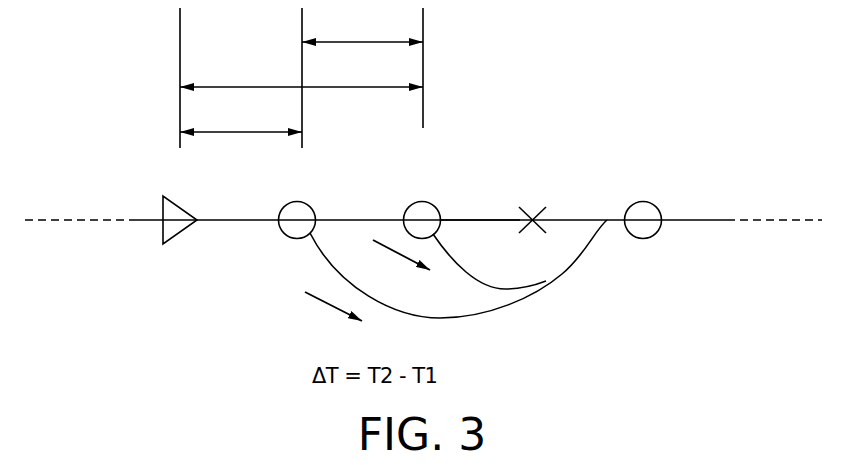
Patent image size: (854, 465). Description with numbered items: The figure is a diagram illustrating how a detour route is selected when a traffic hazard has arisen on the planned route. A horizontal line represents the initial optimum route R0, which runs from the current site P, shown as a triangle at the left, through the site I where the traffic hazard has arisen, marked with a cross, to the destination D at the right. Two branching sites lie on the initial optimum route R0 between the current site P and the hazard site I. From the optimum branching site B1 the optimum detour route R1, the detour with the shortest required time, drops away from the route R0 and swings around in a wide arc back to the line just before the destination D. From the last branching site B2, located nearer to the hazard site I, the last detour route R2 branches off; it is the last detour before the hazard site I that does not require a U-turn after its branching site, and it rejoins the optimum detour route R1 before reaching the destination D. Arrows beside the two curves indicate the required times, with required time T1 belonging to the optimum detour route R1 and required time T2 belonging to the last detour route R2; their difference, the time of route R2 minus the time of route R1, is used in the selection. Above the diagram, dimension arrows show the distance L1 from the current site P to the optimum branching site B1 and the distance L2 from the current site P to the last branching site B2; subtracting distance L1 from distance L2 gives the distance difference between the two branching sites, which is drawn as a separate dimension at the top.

The current site P is at (180, 209).
The optimum branching site B1 is at (297, 206).
The last branching site B2 is at (422, 206).
The site where a traffic hazard has arisen I is at (532, 203).
The destination D is at (643, 206).
The initial optimum route R0 is at (480, 207).
The optimum detour route R1 is at (458, 269).
The last detour route R2 is at (489, 261).
The required time of optimum detour route T1 is at (333, 312).
The required time of last detour route T2 is at (401, 259).
The distance from current site to optimum branching site L1 is at (241, 78).
The distance from current site to last branching site L2 is at (301, 68).